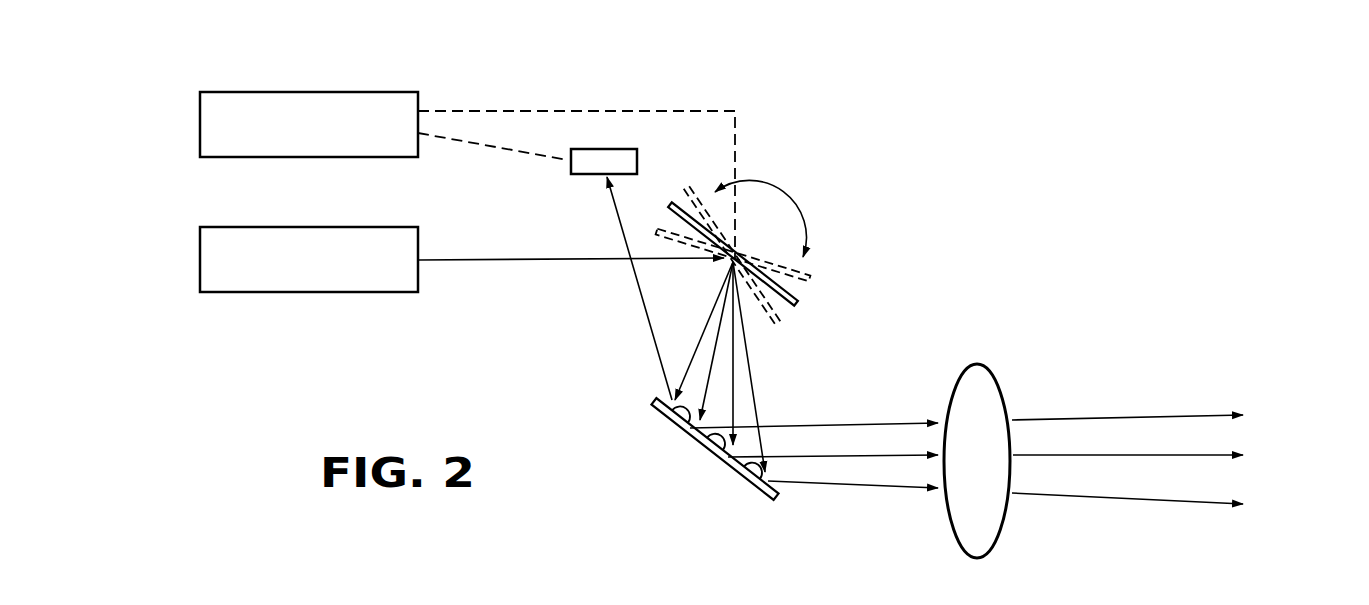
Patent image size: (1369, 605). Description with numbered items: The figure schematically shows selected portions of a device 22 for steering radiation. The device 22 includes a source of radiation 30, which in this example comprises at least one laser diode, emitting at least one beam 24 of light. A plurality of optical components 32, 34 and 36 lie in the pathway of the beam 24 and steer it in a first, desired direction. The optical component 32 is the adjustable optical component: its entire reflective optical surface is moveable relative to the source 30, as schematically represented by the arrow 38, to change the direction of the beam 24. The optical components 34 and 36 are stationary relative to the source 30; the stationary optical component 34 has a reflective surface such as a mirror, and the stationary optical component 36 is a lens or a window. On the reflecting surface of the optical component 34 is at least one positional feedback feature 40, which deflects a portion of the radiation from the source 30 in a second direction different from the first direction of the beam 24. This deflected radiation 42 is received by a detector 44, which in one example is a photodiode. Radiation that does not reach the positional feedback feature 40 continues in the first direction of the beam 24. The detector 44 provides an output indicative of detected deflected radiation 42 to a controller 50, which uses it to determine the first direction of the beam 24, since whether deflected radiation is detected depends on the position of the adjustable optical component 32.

The device 22 is at (978, 170).
The beam 24 is at (530, 260).
The source of radiation 30 is at (205, 240).
The adjustable optical component 32 is at (785, 308).
The stationary optical component 34 is at (778, 488).
The stationary optical component 36 is at (995, 503).
The arrow 38 is at (773, 185).
The positional feedback feature 40 is at (742, 466).
The deflected radiation 42 is at (642, 315).
The detector 44 is at (622, 152).
The controller 50 is at (205, 102).